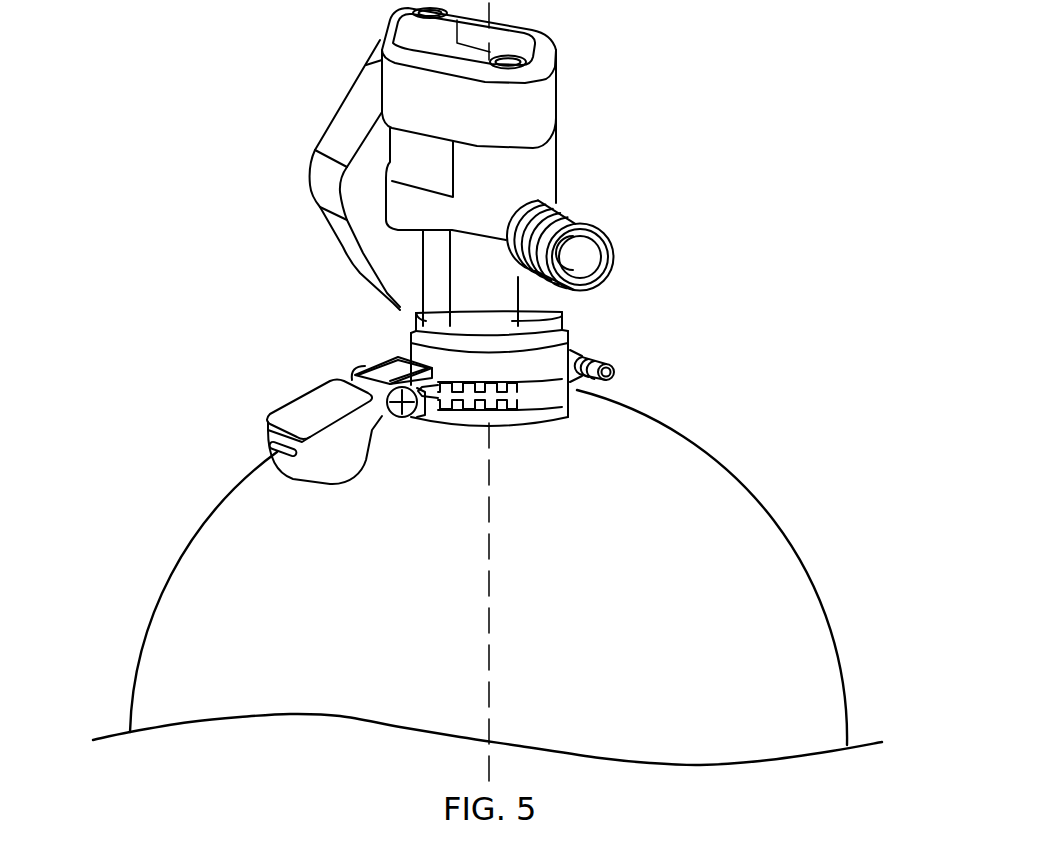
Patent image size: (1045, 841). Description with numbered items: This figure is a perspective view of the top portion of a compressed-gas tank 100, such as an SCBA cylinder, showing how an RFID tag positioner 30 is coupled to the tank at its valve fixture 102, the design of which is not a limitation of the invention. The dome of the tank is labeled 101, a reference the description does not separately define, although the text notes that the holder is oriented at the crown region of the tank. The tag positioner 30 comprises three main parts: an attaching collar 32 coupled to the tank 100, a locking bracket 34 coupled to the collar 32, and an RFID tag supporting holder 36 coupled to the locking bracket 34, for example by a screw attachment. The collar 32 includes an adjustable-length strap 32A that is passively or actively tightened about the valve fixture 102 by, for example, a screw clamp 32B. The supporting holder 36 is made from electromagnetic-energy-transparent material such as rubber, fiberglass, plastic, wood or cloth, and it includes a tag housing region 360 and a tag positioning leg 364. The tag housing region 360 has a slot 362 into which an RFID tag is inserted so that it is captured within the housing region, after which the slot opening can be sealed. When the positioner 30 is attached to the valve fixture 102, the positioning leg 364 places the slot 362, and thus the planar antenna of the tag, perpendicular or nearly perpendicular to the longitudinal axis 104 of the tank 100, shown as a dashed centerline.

The compressed-gas tank 100 is at (830, 618).
The cylinder body 101 is at (243, 580).
The valve fixture 102 is at (740, 3).
The longitudinal axis 104 is at (490, 690).
The RFID tag positioner 30 is at (348, 343).
The attaching collar 32 is at (617, 393).
The adjustable-length strap 32A is at (550, 397).
The screw clamp 32B is at (609, 363).
The locking bracket 34 is at (418, 416).
The RFID tag supporting holder 36 is at (281, 408).
The tag housing region 360 is at (265, 421).
The slot 362 is at (270, 447).
The tag positioning leg 364 is at (313, 469).